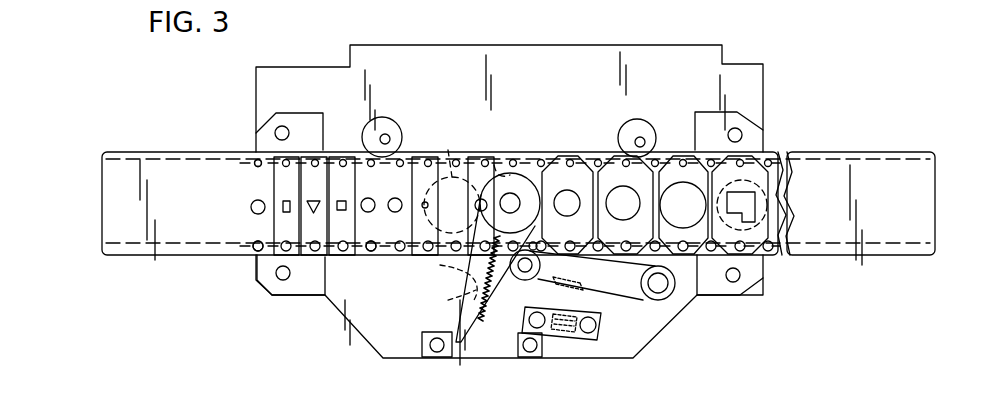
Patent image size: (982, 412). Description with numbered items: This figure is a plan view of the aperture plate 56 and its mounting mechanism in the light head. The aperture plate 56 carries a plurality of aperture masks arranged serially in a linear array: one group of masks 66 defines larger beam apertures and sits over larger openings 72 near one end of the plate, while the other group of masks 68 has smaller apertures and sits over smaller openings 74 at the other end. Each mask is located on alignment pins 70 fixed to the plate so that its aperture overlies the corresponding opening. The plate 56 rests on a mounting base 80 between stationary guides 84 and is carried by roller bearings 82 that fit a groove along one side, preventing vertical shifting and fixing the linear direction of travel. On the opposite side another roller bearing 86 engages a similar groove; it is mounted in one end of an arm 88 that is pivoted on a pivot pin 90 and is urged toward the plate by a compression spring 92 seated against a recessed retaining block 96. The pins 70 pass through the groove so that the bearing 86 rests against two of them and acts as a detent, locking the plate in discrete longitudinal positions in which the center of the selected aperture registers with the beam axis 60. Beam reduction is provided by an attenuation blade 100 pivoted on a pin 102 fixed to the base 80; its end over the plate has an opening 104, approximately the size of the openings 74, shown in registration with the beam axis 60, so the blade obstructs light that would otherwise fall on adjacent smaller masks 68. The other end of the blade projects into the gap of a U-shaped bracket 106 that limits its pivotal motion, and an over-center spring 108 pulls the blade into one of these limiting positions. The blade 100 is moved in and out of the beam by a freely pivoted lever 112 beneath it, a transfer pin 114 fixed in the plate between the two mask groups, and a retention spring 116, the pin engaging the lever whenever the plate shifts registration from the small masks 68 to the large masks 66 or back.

The aperture plate 56 is at (185, 258).
The beam axis 60 is at (520, 170).
The aperture masks 66 is at (600, 168).
The aperture masks 68 is at (338, 162).
The alignment pins 70 is at (256, 160).
The openings 72 is at (666, 214).
The openings 74 is at (256, 200).
The mounting base 80 is at (385, 62).
The roller bearings 82 is at (394, 130).
The stationary guides 84 is at (266, 120).
The roller bearing 86 is at (525, 280).
The arm 88 is at (653, 302).
The pivot pin 90 is at (664, 297).
The compression spring 92 is at (586, 296).
The recessed retaining block 96 is at (574, 342).
The attenuation blade 100 is at (448, 148).
The pin 102 is at (490, 262).
The opening 104 is at (520, 205).
The U-shaped bracket 106 is at (508, 352).
The over-center spring 108 is at (494, 352).
The lever 112 is at (440, 266).
The transfer pin 114 is at (537, 246).
The retention spring 116 is at (448, 302).